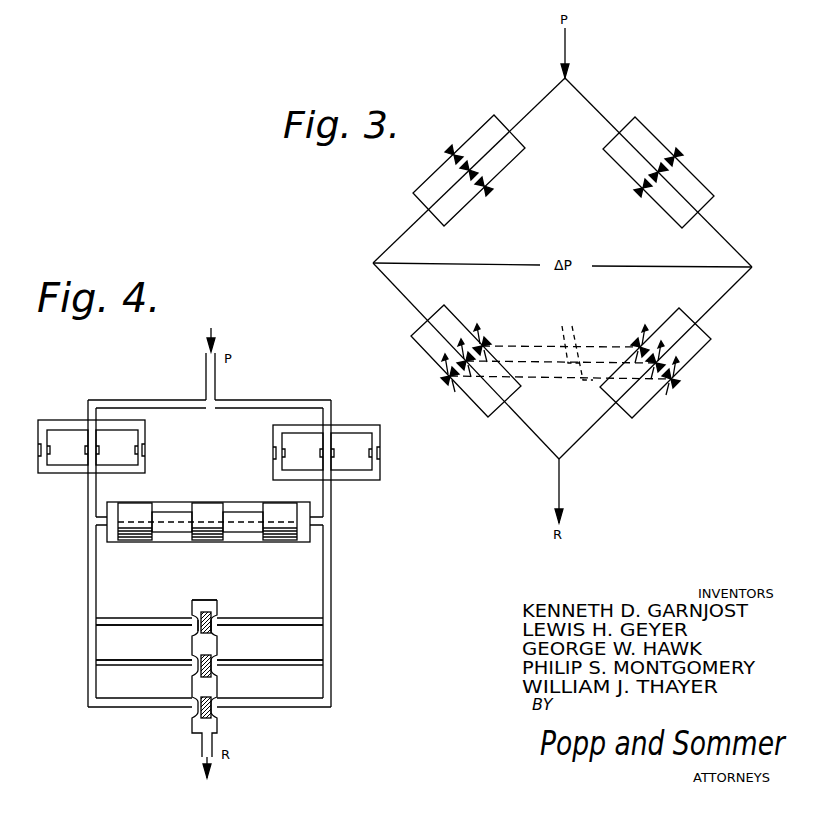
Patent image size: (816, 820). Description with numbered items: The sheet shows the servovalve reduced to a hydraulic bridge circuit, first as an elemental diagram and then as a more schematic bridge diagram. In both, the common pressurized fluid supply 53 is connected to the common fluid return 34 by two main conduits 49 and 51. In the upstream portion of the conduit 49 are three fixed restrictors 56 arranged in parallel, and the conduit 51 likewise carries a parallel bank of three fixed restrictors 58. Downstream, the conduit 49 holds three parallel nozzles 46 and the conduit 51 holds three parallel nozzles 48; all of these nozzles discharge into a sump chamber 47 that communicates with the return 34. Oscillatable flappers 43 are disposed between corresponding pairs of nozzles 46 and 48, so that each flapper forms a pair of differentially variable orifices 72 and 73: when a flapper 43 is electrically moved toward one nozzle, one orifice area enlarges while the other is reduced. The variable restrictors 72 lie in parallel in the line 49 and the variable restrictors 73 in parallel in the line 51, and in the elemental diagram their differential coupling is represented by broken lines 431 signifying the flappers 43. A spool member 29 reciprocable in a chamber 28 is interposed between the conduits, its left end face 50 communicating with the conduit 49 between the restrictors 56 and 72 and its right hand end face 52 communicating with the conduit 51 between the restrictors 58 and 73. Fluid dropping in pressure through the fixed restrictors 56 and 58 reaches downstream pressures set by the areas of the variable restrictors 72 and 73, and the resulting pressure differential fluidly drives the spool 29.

In FIG. 3, the common pressurized fluid supply 53 is at (567, 48).
In FIG. 4, the common pressurized fluid supply 53 is at (206, 368).
In FIG. 3, the common fluid return 34 is at (560, 478).
In FIG. 4, the common fluid return 34 is at (202, 743).
In FIG. 3, the main conduit 49 is at (405, 231).
In FIG. 4, the main conduit 49 is at (88, 578).
In FIG. 3, the main conduit 51 is at (725, 229).
In FIG. 4, the main conduit 51 is at (331, 580).
In FIG. 3, the upstream fixed restrictors 56 is at (453, 153).
In FIG. 4, the upstream fixed restrictors 56 is at (135, 449).
In FIG. 3, the upstream fixed restrictors 58 is at (675, 157).
In FIG. 4, the upstream fixed restrictors 58 is at (369, 452).
In FIG. 3, the variable orifices or restrictors 72 is at (483, 345).
In FIG. 4, the variable orifices or restrictors 72 is at (195, 600).
In FIG. 3, the variable orifices or restrictors 73 is at (640, 347).
In FIG. 4, the variable orifices or restrictors 73 is at (213, 620).
In FIG. 3, the broken lines 431 is at (560, 345).
In FIG. 4, the spool member 29 is at (169, 511).
In FIG. 4, the chamber 28 is at (164, 540).
In FIG. 4, the left end face 50 is at (114, 533).
In FIG. 4, the right hand end face 52 is at (297, 534).
In FIG. 4, the sump chamber 47 is at (208, 600).
In FIG. 4, the oscillatable flappers 43 is at (211, 612).
In FIG. 4, the downstream nozzles 46 is at (168, 698).
In FIG. 4, the downstream nozzles 48 is at (272, 681).